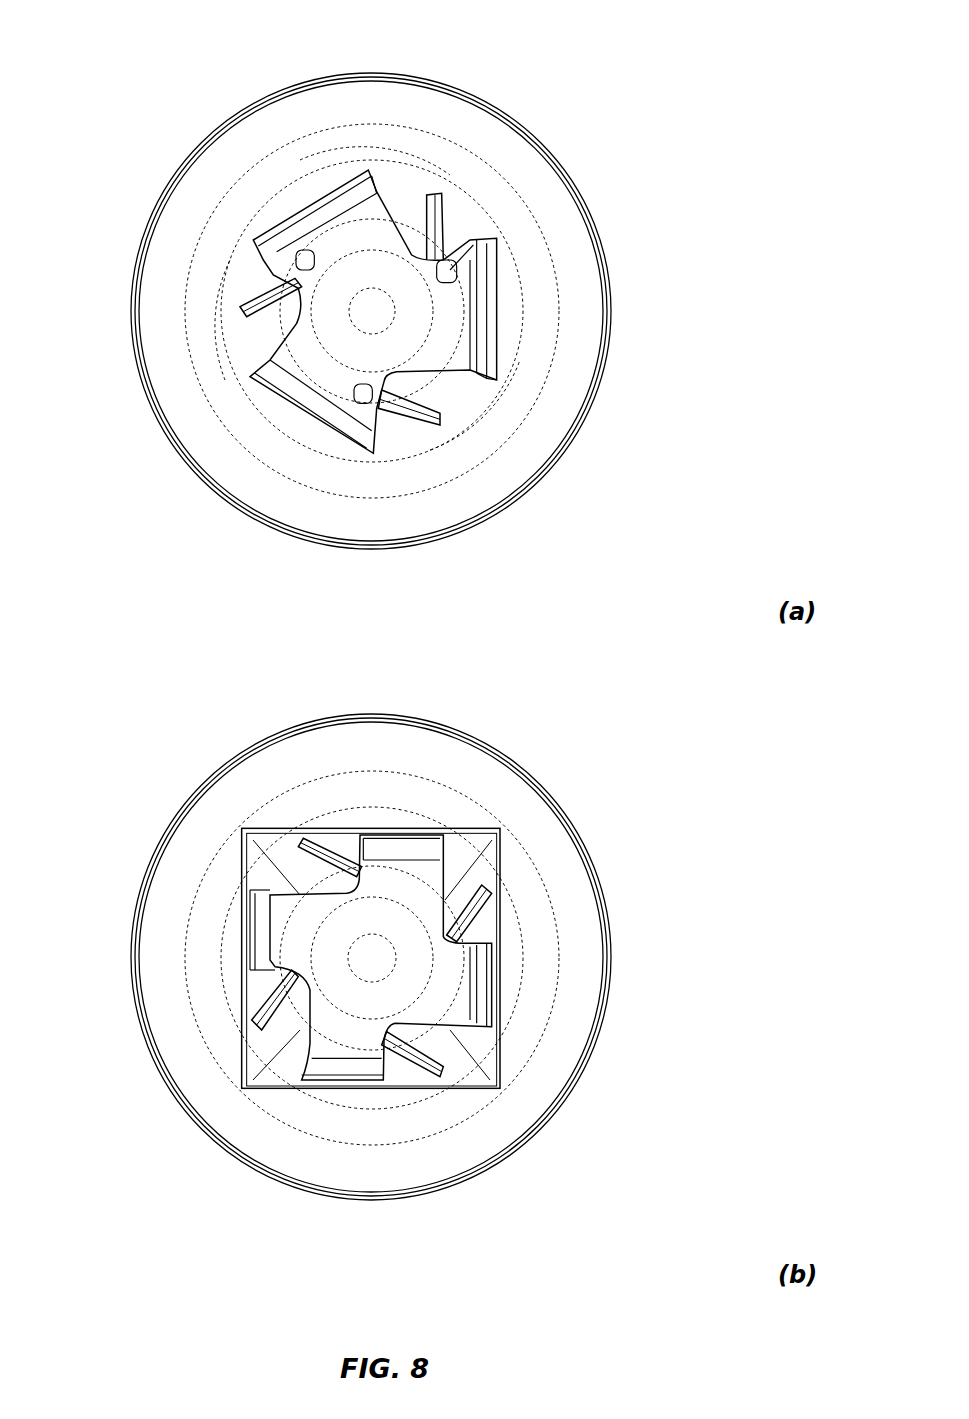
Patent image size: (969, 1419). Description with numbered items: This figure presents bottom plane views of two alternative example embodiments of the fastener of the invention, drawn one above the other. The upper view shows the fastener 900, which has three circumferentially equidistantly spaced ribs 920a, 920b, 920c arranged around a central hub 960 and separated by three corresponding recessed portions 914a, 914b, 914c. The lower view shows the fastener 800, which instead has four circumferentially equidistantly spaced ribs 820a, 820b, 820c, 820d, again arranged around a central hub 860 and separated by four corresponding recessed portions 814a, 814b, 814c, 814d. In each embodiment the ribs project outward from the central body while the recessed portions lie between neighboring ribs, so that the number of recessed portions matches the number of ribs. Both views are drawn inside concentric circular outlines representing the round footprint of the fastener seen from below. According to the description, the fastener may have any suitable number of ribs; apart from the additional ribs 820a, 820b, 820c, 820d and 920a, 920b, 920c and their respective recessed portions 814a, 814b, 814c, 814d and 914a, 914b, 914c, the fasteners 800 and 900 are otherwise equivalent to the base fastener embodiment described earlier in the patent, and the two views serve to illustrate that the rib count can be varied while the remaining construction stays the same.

The fastener 900 is at (84, 100).
The recessed portion 914a is at (283, 330).
The recessed portion 914b is at (455, 400).
The recessed portion 914c is at (403, 197).
The rib 920a is at (248, 297).
The rib 920b is at (413, 428).
The rib 920c is at (450, 182).
The central hub 960 is at (390, 312).
The fastener 800 is at (74, 720).
The recessed portion 814a is at (290, 878).
The recessed portion 814b is at (290, 1042).
The recessed portion 814c is at (462, 1045).
The recessed portion 814d is at (447, 883).
The rib 820a is at (318, 842).
The rib 820b is at (262, 995).
The rib 820c is at (428, 1075).
The rib 820d is at (488, 906).
The central hub 860 is at (385, 963).